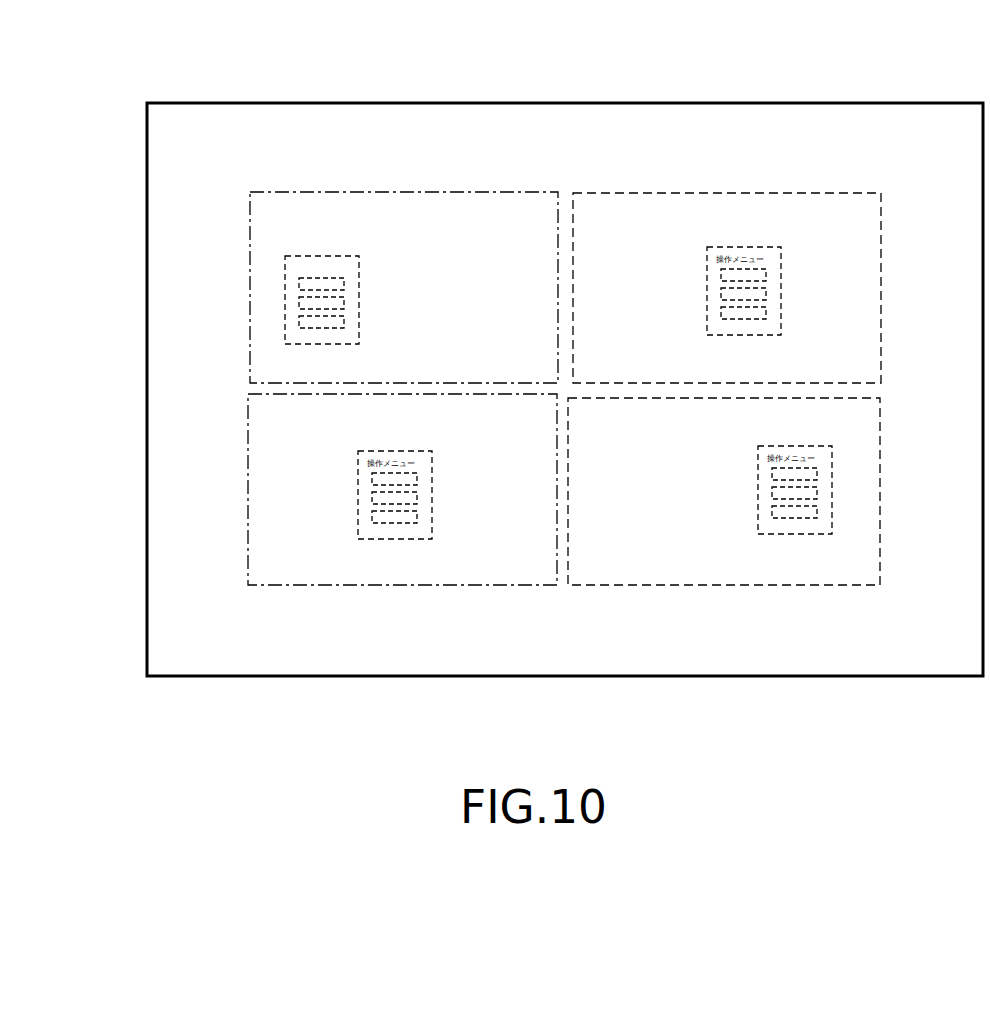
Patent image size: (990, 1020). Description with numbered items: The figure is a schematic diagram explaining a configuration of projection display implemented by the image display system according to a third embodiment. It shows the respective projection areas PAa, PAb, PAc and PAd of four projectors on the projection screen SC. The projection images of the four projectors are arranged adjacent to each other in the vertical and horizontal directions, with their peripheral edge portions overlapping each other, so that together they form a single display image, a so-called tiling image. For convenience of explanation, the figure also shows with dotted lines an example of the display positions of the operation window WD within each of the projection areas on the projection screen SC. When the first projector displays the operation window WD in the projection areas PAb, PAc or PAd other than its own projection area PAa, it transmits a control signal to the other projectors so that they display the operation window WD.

The projection screen SC is at (915, 104).
The projection area PAa is at (463, 192).
The projection area PAb is at (725, 193).
The projection area PAc is at (460, 585).
The projection area PAd is at (722, 585).
The operation window WD is at (298, 256).